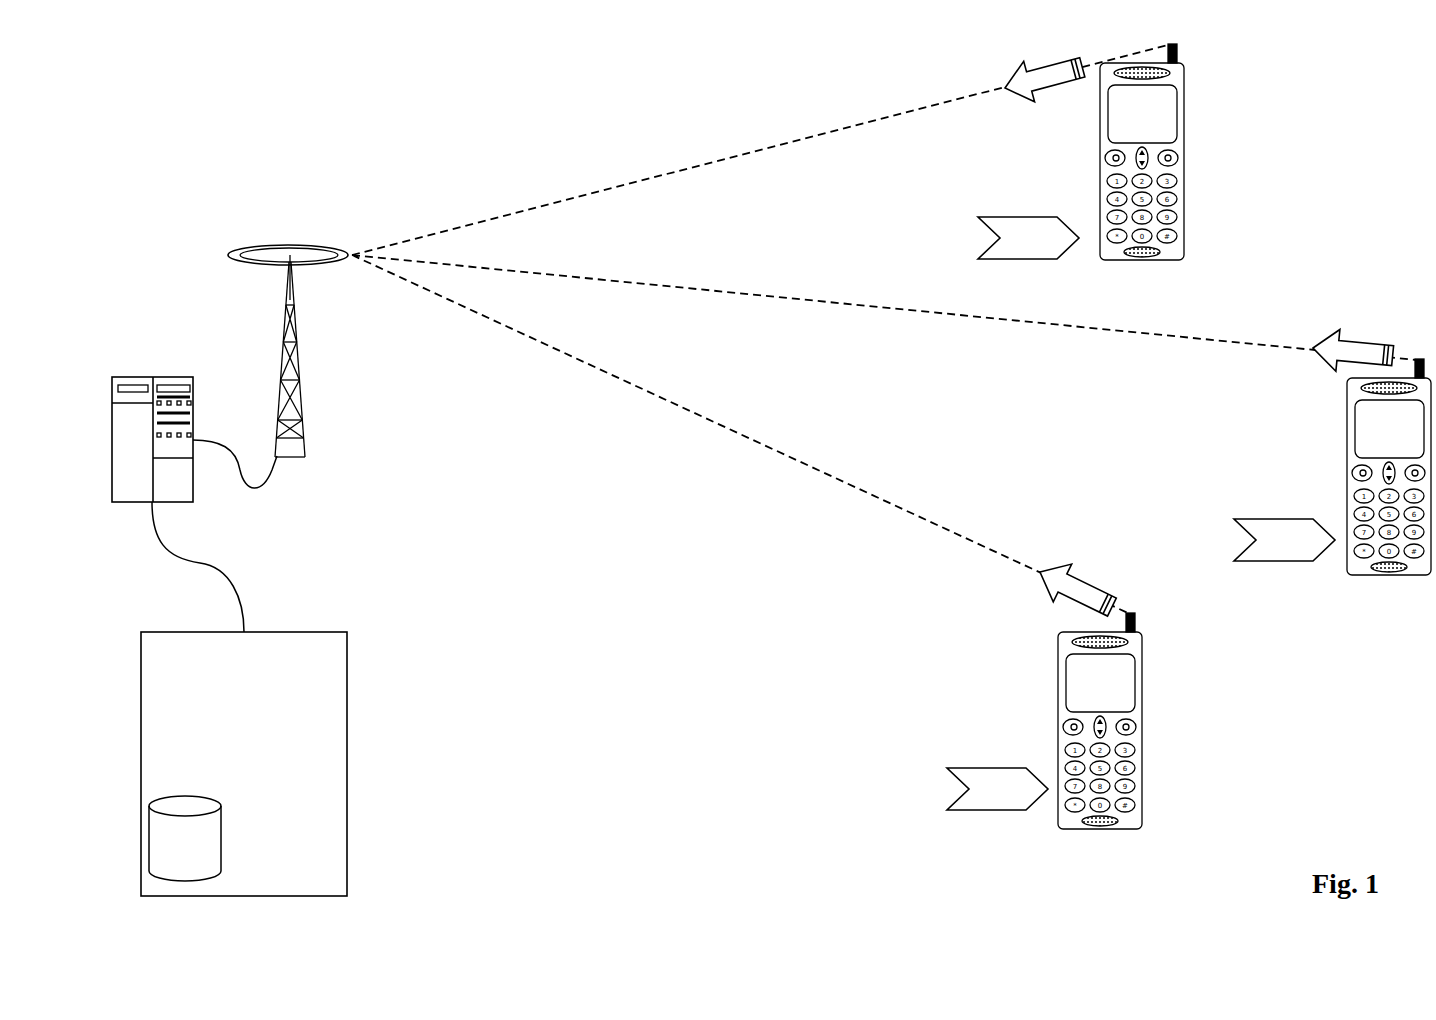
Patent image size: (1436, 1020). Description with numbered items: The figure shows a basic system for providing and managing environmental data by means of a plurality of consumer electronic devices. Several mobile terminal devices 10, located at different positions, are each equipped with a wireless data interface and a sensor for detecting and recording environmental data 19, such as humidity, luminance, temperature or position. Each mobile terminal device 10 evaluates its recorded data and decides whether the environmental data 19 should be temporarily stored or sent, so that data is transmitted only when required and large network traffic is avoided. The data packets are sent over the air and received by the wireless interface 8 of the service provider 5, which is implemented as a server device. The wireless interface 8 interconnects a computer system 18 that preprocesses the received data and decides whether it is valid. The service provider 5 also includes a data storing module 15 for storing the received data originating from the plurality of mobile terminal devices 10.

The service provider 5 is at (340, 619).
The wireless interface 8 is at (289, 214).
The mobile terminal device 10 is at (1244, 456).
The database 15 is at (137, 773).
The computer system 18 is at (141, 348).
The environmental data 19 is at (965, 229).